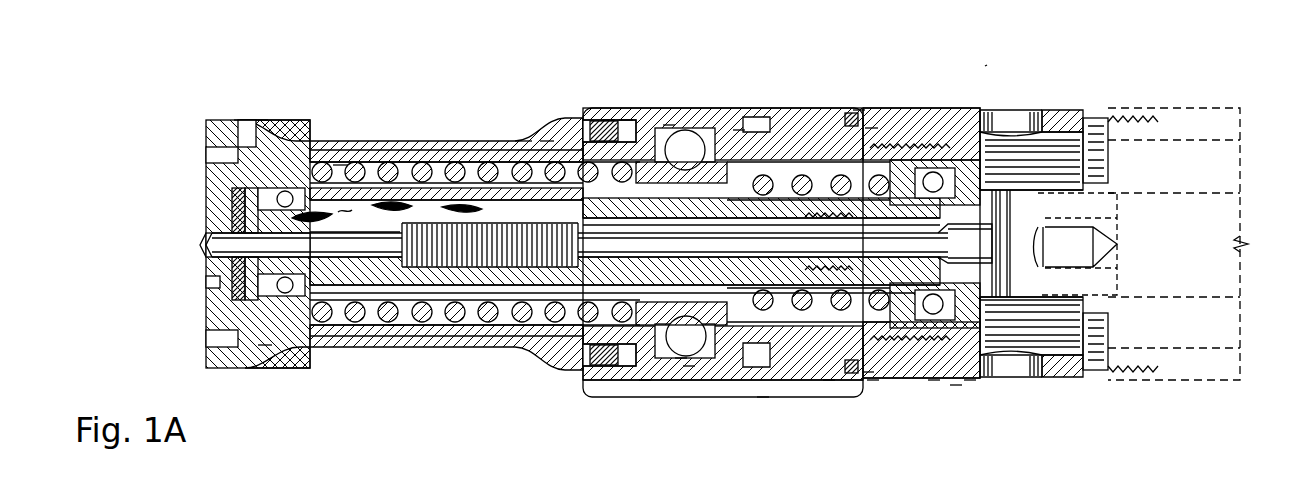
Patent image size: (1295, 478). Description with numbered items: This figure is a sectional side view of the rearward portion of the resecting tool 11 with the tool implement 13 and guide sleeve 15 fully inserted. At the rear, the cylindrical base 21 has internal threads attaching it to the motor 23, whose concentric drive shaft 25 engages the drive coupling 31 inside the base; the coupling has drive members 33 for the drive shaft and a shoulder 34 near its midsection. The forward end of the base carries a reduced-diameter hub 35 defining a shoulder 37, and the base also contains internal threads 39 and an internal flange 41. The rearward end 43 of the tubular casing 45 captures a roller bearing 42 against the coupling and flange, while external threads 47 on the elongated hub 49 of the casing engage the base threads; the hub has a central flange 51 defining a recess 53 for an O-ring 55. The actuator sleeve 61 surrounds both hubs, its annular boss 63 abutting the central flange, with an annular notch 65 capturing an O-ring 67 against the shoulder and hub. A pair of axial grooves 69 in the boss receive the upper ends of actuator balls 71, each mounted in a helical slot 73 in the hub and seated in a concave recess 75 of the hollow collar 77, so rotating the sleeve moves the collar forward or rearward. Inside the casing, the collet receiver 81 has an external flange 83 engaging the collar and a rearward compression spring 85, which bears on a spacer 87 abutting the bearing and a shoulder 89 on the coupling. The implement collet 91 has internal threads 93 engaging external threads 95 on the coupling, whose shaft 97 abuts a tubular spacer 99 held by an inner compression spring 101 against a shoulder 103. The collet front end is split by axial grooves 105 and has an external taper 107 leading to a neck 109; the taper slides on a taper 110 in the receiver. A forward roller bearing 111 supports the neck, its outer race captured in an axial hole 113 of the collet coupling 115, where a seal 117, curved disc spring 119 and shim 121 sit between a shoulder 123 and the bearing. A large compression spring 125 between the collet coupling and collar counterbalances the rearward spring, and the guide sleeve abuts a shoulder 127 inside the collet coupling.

The resecting tool 11 is at (994, 56).
The tool implement 13 is at (205, 245).
The guide sleeve 15 is at (212, 283).
The cylindrical base 21 is at (1078, 112).
The motor 23 is at (1193, 108).
The drive shaft 25 is at (1166, 205).
The drive coupling 31 is at (883, 130).
The drive members 33 is at (1123, 120).
The shoulder 34 is at (980, 300).
The hub 35 is at (798, 120).
The shoulder 37 is at (859, 110).
The internal threads 39 is at (934, 380).
The internal flange 41 is at (970, 380).
The roller bearing 42 is at (1008, 130).
The rearward end 43 is at (983, 115).
The casing 45 is at (524, 141).
The external threads 47 is at (956, 385).
The hub 49 is at (703, 150).
The central flange 51 is at (625, 120).
The recess 53 is at (600, 120).
The O-ring 55 is at (609, 120).
The actuator sleeve 61 is at (727, 397).
The annular boss 63 is at (758, 130).
The annular notch 65 is at (873, 380).
The O-ring 67 is at (868, 372).
The axial grooves 69 is at (668, 125).
The actuator ball 71 is at (689, 366).
The helical slot 73 is at (681, 358).
The concave recess 75 is at (673, 356).
The collar 77 is at (645, 380).
The tool collet receiver 81 is at (410, 223).
The external flange 83 is at (763, 397).
The rearward compression spring 85 is at (898, 148).
The spacer 87 is at (883, 372).
The shoulder 89 is at (908, 165).
The tool implement collet 91 is at (531, 366).
The internal threads 93 is at (871, 128).
The external threads 95 is at (829, 380).
The shaft 97 is at (738, 130).
The tubular spacer 99 is at (547, 141).
The inner compression spring 101 is at (448, 195).
The shoulder 103 is at (442, 335).
The axial grooves 105 is at (336, 183).
The external taper 107 is at (348, 172).
The neck 109 is at (242, 120).
The taper 110 is at (395, 312).
The forward roller bearing 111 is at (260, 120).
The axial hole 113 is at (303, 310).
The collet coupling 115 is at (265, 345).
The seal 117 is at (222, 300).
The curved disc spring 119 is at (230, 344).
The shim 121 is at (238, 162).
The shoulder 123 is at (232, 187).
The large compression spring 125 is at (372, 210).
The shoulder 127 is at (214, 222).